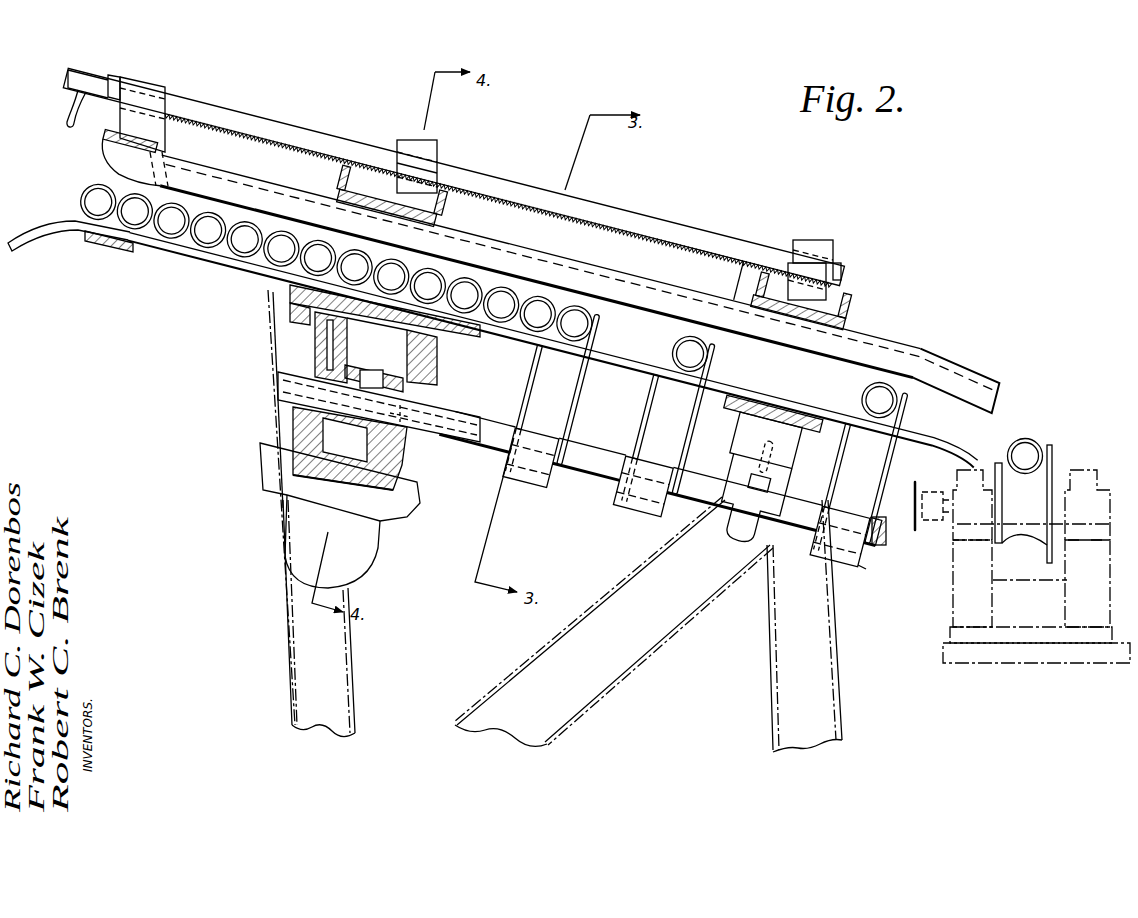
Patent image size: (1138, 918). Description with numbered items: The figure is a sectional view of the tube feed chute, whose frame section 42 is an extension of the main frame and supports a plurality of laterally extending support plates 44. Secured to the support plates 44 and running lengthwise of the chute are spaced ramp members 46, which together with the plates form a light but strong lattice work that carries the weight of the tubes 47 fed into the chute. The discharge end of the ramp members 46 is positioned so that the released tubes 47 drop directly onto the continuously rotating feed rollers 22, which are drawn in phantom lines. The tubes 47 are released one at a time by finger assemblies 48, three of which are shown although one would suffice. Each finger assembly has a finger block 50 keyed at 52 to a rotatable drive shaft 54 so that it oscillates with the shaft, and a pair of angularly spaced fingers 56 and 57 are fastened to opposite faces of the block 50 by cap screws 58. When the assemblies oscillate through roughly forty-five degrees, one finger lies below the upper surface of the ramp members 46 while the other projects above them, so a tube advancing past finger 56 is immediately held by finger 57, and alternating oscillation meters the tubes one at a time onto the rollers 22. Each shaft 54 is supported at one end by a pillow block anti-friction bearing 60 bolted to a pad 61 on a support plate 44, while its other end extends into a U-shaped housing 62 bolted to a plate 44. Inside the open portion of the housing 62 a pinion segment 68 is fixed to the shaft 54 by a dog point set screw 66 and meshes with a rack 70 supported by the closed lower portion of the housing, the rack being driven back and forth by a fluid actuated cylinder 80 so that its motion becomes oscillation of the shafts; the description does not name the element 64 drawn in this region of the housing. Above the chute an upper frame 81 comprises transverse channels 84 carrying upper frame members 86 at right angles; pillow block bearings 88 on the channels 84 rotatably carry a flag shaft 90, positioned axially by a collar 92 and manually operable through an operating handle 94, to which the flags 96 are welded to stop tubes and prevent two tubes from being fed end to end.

The feed rollers 22 is at (1067, 452).
The frame section 42 is at (310, 690).
The support plates 44 is at (118, 258).
The ramp members 46 is at (45, 238).
The tubes 47 is at (92, 187).
The finger assemblies 48 is at (517, 417).
The finger block 50 is at (548, 488).
The key 52 is at (868, 569).
The drive shaft 54 is at (600, 470).
The finger 56 is at (540, 360).
The finger 57 is at (585, 398).
The cap screws 58 is at (878, 527).
The pillow block anti-friction bearing 60 is at (745, 535).
The pad 61 is at (750, 442).
The U-shaped housing 62 is at (300, 428).
The cross bar 64 is at (405, 412).
The dog point set screw 66 is at (365, 372).
The pinion segment 68 is at (390, 388).
The rack 70 is at (275, 472).
The fluid actuated cylinder 80 is at (300, 548).
The upper frame 81 is at (905, 335).
The transverse channels 84 is at (465, 195).
The upper frame members 86 is at (975, 372).
The pillow block bearings 88 is at (165, 80).
The flag shaft 90 is at (305, 128).
The collar 92 is at (130, 72).
The operating handle 94 is at (70, 126).
The flags 96 is at (325, 163).